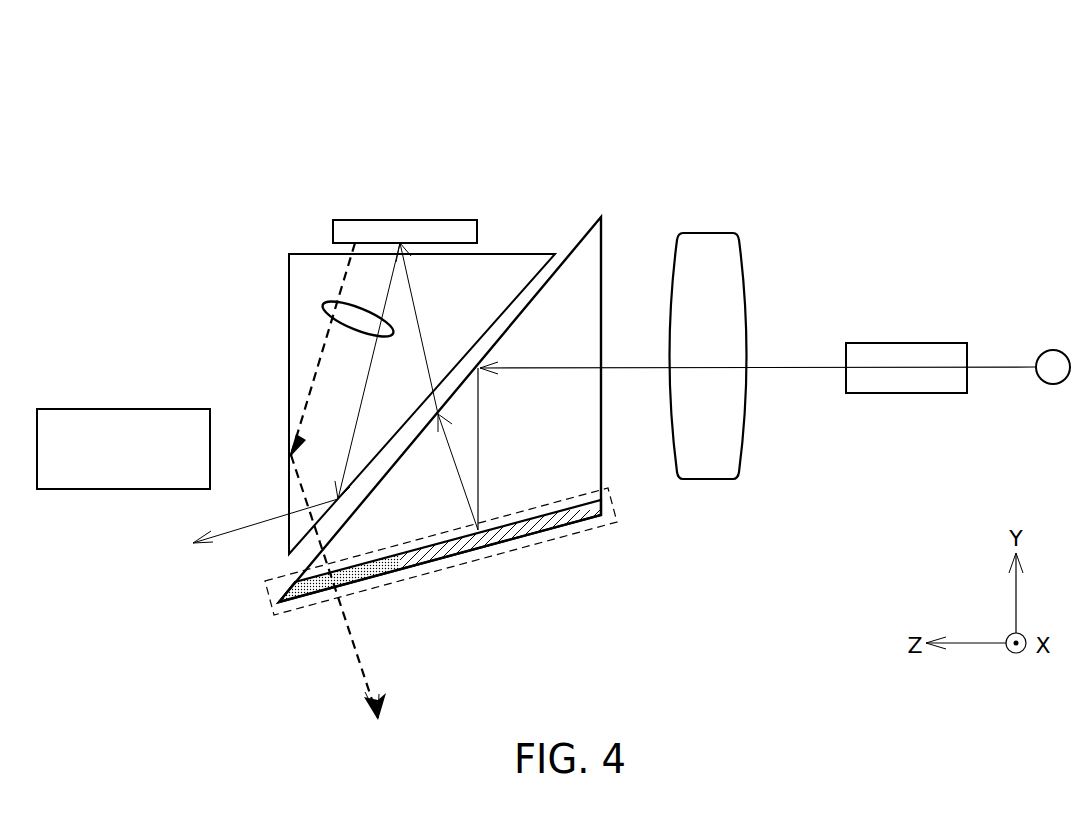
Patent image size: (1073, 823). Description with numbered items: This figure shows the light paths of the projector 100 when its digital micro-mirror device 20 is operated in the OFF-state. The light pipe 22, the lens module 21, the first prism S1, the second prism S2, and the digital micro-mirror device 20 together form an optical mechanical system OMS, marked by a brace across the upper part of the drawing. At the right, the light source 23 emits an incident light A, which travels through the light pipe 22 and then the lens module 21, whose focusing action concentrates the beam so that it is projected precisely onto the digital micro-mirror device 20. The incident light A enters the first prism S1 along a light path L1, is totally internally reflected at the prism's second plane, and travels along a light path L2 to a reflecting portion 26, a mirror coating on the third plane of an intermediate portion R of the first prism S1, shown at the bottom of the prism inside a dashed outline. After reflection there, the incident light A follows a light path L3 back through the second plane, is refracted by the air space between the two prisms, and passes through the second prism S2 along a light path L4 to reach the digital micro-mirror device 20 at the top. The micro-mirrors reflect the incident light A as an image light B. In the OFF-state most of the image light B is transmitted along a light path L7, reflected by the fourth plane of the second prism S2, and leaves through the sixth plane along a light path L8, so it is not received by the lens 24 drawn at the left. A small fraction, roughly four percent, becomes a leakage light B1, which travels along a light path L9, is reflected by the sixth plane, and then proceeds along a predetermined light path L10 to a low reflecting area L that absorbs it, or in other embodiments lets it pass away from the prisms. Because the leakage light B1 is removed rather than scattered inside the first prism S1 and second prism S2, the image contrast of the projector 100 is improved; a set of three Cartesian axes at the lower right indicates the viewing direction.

The projector 100 is at (157, 132).
The digital micro-mirror device 20 is at (407, 220).
The lens module 21 is at (708, 233).
The light pipe 22 is at (906, 343).
The light source 23 is at (1058, 349).
The lens 24 is at (111, 461).
The reflecting portion 26 is at (512, 538).
The optical mechanical system OMS is at (958, 138).
The first prism S1 is at (602, 470).
The second prism S2 is at (289, 300).
The incident light A is at (797, 367).
The image light B is at (322, 307).
The leakage light B1 is at (358, 657).
The intermediate portion R is at (270, 598).
The low reflecting area L is at (382, 568).
The light path L1 is at (758, 357).
The light path L2 is at (496, 449).
The light path L3 is at (451, 472).
The light path L4 is at (425, 328).
The light path L7 is at (367, 371).
The light path L8 is at (265, 521).
The light path L9 is at (312, 425).
The predetermined light path L10 is at (346, 681).